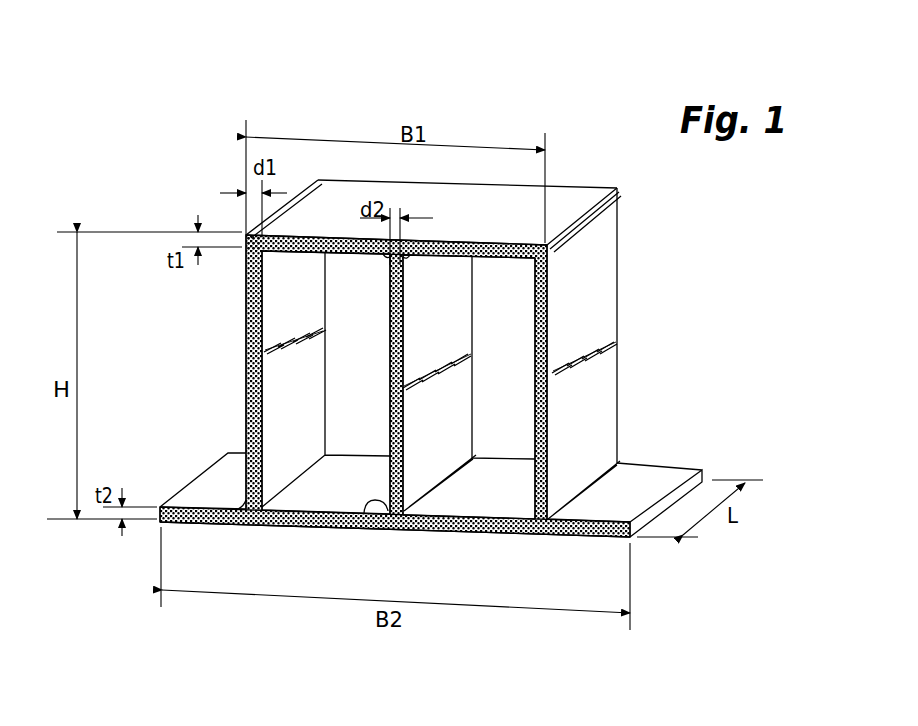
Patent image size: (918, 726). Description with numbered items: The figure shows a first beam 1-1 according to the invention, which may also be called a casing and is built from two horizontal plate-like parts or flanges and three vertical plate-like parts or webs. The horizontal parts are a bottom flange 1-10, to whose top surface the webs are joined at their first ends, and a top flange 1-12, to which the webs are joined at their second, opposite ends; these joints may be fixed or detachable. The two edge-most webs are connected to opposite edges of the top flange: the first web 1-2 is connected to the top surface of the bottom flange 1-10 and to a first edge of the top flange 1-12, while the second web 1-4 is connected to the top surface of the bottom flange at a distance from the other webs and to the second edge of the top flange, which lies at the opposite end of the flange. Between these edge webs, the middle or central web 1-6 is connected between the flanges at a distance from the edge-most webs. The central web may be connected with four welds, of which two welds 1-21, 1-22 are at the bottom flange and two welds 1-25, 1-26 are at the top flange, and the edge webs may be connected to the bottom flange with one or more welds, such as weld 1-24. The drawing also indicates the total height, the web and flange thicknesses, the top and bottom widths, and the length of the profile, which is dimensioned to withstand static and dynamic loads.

The heat sink / profile assembly 1-1 is at (189, 152).
The first web 1-2 is at (248, 382).
The second web 1-4 is at (590, 282).
The central web 1-6 is at (444, 400).
The bottom flange 1-10 is at (647, 483).
The top flange 1-12 is at (568, 197).
The weld 1-21 is at (416, 505).
The weld 1-22 is at (363, 510).
The weld 1-24 is at (243, 510).
The weld 1-25 is at (405, 257).
The weld 1-26 is at (384, 256).